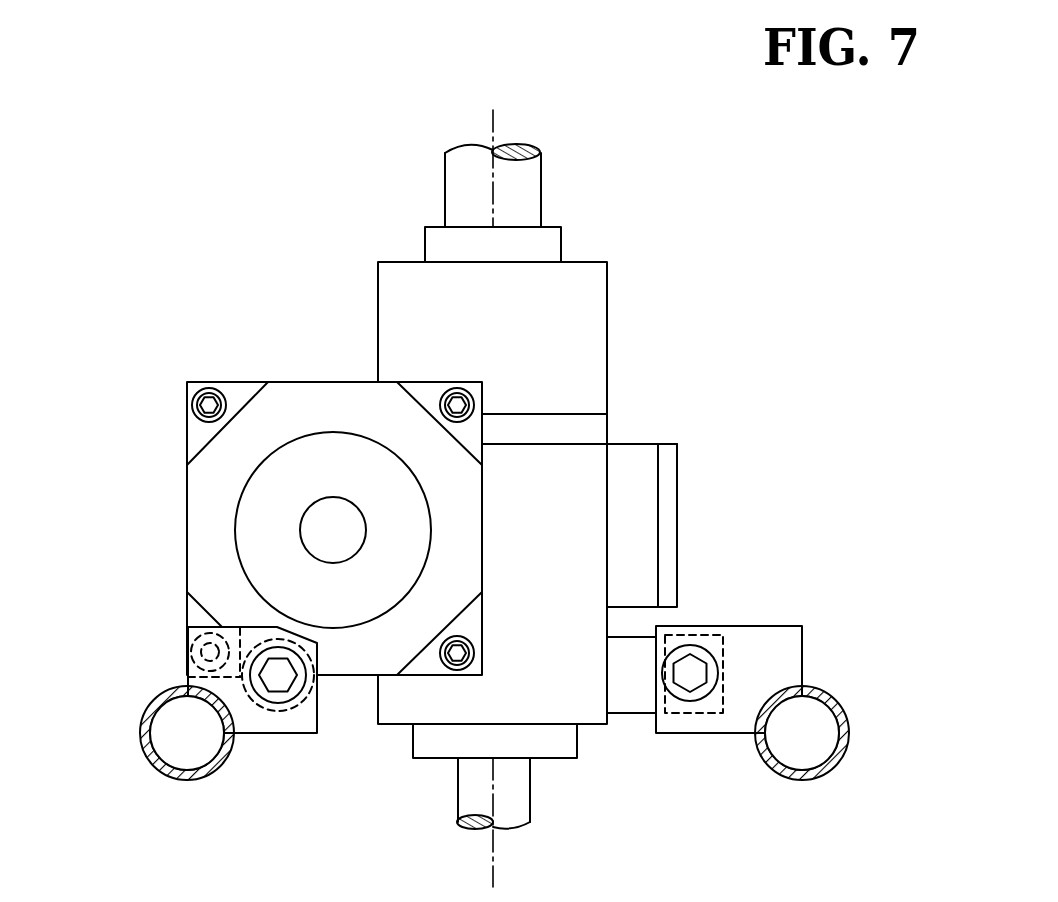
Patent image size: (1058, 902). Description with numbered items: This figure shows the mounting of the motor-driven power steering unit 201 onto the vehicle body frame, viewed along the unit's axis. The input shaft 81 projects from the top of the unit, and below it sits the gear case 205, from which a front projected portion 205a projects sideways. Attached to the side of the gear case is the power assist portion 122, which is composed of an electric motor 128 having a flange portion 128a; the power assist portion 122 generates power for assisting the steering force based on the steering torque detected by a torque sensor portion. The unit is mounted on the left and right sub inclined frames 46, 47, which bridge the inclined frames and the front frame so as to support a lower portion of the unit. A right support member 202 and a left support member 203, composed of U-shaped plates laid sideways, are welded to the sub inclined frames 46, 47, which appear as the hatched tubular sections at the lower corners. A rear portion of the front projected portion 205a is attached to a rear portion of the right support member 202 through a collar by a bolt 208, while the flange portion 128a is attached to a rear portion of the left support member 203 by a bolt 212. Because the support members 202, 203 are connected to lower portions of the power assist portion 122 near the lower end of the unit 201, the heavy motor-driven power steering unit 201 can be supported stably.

The input shaft 81 is at (452, 186).
The motor-driven power steering unit 201 is at (597, 259).
The power assist portion 122 is at (272, 466).
The electric motor 128 is at (245, 505).
The flange portion 128a is at (197, 565).
The sub inclined frame 46 is at (140, 723).
The sub inclined frame 47 is at (848, 713).
The left support member 203 is at (275, 742).
The bolt 212 is at (297, 693).
The gear case 205 is at (391, 729).
The front projected portion 205a is at (632, 703).
The right support member 202 is at (739, 667).
The bolt 208 is at (680, 698).